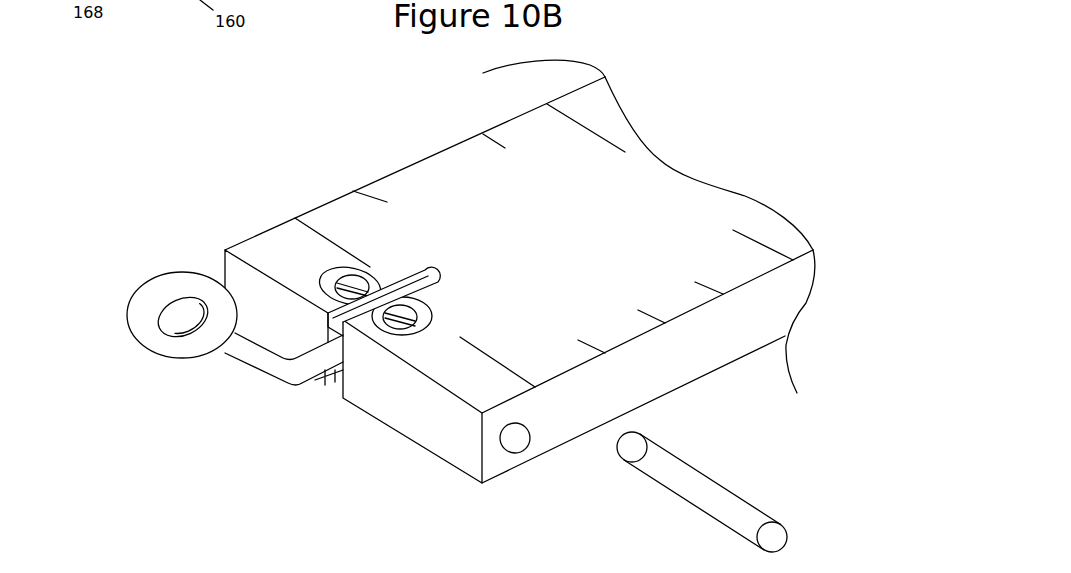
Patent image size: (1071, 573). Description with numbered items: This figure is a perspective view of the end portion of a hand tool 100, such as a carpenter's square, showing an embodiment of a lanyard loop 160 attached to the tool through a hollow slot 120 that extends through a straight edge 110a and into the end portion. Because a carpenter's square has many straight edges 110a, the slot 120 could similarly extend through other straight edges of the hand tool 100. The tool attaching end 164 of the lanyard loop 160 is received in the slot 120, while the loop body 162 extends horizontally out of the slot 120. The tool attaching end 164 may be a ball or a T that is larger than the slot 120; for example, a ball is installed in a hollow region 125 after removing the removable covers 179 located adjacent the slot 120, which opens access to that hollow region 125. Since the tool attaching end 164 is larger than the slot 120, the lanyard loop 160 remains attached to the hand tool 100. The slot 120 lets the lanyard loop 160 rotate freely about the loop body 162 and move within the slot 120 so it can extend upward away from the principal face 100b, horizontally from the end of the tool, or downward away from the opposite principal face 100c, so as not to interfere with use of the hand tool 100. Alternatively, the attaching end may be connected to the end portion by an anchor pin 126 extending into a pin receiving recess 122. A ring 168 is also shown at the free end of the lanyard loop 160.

The hand tool 100 is at (443, 175).
The principal face 100b is at (657, 229).
The principal face 100c is at (692, 385).
The straight edge 110a is at (390, 430).
The hollow slot 120 is at (408, 292).
The pin receiving recess 122 is at (519, 443).
The hollow region 125 is at (370, 265).
The anchor pin 126 is at (647, 437).
The lanyard loop 160 is at (247, 367).
The loop body 162 is at (315, 362).
The tool attaching end 164 is at (328, 312).
The ring 168 is at (165, 283).
The removable cover 179 is at (323, 277).